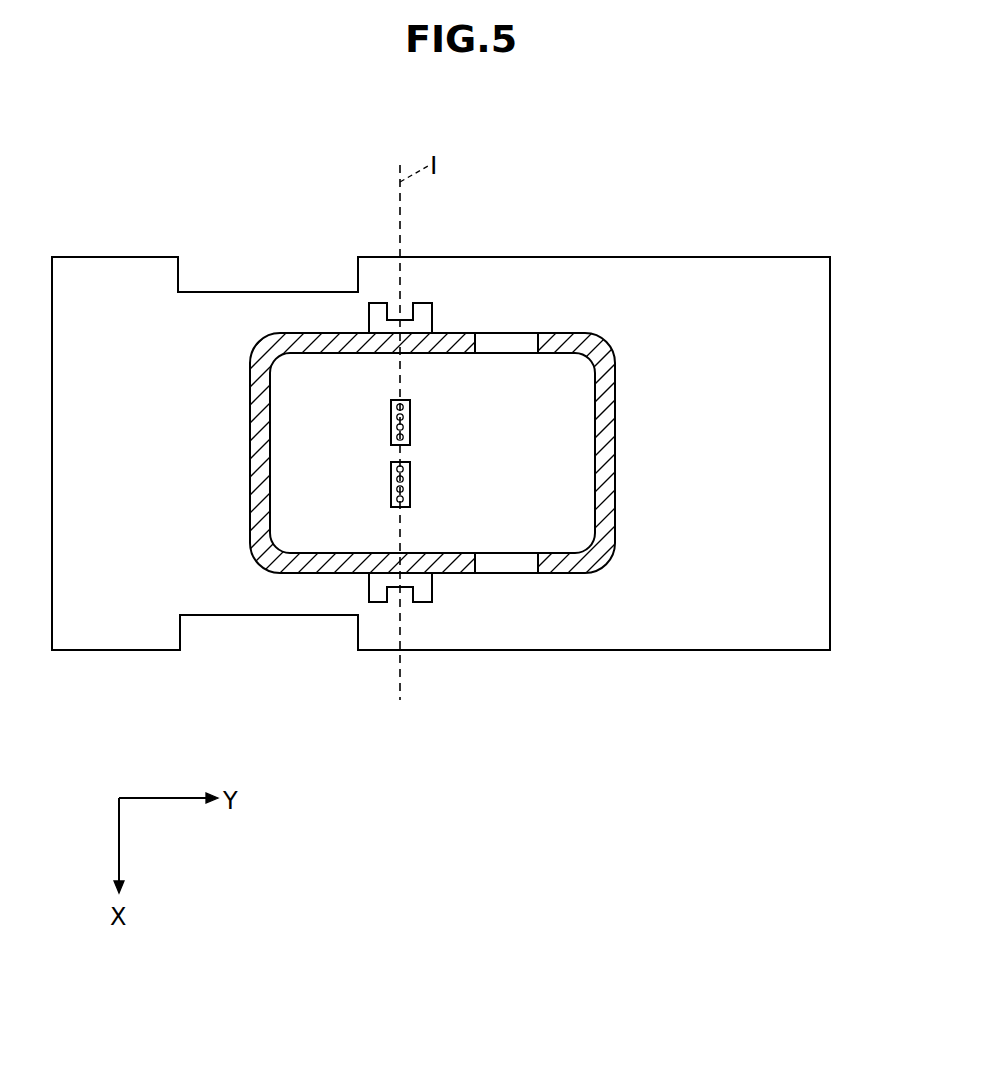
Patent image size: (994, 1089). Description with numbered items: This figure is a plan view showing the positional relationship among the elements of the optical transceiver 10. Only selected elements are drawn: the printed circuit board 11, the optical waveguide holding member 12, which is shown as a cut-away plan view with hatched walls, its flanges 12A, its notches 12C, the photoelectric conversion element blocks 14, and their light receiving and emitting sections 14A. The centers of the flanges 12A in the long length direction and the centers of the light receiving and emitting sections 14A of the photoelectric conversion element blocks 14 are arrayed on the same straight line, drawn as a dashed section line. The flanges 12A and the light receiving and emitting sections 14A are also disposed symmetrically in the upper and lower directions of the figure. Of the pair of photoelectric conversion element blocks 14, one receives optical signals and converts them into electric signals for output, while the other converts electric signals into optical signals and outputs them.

The optical transceiver 10 is at (828, 206).
The printed circuit board 11 is at (820, 457).
The optical waveguide holding member 12 is at (605, 398).
The flanges 12A is at (422, 315).
The notches 12C is at (513, 343).
The photoelectric conversion element blocks 14 is at (337, 456).
The light receiving and emitting sections 14A is at (391, 427).